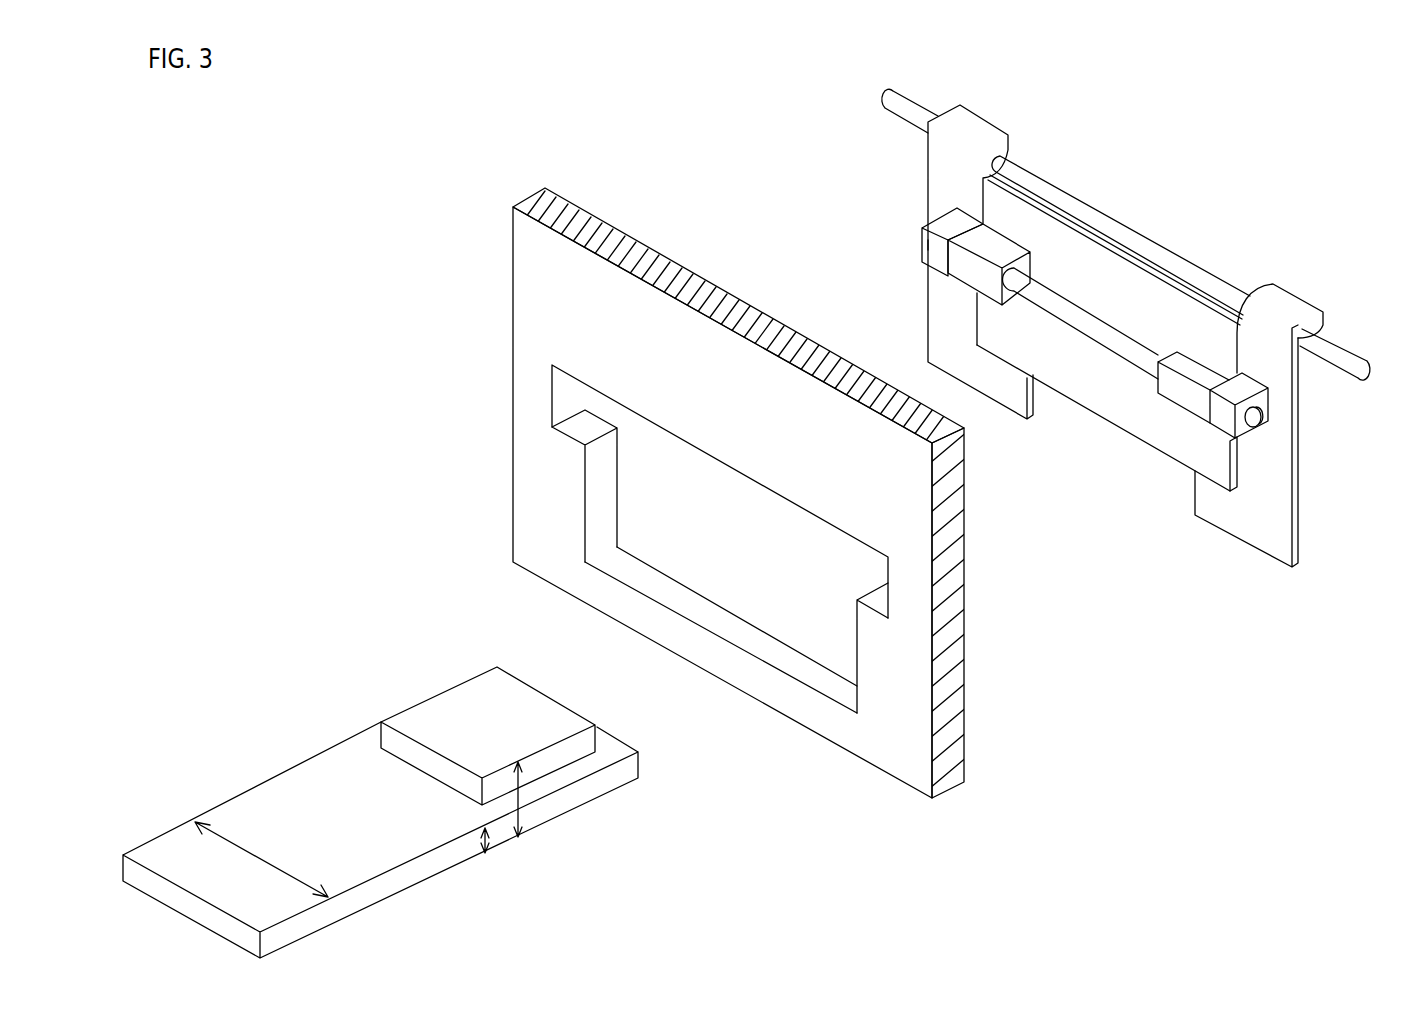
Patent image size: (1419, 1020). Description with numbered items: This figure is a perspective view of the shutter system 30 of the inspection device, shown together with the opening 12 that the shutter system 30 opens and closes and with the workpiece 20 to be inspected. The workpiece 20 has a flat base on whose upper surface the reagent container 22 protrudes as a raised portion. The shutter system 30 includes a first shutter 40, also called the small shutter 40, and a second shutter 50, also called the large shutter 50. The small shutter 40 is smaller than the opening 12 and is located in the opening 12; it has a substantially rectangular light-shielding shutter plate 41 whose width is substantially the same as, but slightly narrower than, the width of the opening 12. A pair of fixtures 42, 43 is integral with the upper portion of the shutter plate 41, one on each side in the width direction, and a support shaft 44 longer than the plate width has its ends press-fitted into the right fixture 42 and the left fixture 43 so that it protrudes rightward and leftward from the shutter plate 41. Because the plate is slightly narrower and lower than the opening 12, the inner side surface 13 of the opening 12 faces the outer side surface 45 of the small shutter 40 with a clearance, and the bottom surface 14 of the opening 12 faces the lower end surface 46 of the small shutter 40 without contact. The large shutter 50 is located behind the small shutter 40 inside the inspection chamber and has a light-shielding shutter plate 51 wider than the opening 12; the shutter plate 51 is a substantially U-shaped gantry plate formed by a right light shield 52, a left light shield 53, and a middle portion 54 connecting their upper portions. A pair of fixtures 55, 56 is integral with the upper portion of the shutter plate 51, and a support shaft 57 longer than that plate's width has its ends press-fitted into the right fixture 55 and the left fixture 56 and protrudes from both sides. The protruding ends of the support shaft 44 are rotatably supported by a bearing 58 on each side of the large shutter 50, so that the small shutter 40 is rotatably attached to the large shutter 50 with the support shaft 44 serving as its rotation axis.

The opening 12 is at (671, 526).
The inner side surface 13 is at (598, 500).
The bottom surface 14 is at (783, 658).
The workpiece 20 is at (268, 745).
The reagent container 22 is at (432, 720).
The shutter system 30 is at (1154, 158).
The first shutter 40 is at (1106, 450).
The shutter plate 41 is at (1114, 397).
The fixture 42 is at (1183, 402).
The fixture 43 is at (993, 252).
The support shaft 44 is at (1263, 423).
The outer side surface 45 is at (975, 338).
The lower end surface 46 is at (1155, 452).
The second shutter 50 is at (905, 186).
The shutter plate 51 is at (1080, 224).
The right light shield 52 is at (1280, 553).
The left light shield 53 is at (962, 375).
The middle portion 54 is at (1122, 258).
The fixture 55 is at (1292, 298).
The fixture 56 is at (978, 128).
The support shaft 57 is at (1352, 356).
The bearing 58 is at (968, 224).